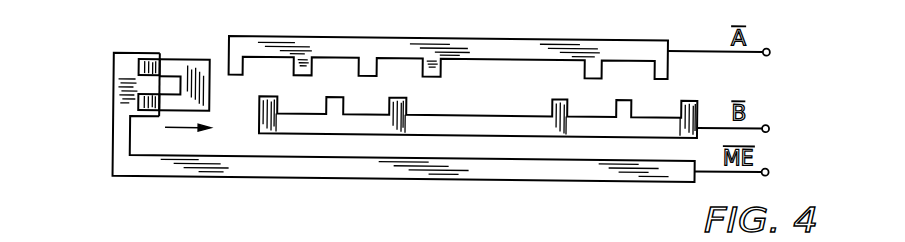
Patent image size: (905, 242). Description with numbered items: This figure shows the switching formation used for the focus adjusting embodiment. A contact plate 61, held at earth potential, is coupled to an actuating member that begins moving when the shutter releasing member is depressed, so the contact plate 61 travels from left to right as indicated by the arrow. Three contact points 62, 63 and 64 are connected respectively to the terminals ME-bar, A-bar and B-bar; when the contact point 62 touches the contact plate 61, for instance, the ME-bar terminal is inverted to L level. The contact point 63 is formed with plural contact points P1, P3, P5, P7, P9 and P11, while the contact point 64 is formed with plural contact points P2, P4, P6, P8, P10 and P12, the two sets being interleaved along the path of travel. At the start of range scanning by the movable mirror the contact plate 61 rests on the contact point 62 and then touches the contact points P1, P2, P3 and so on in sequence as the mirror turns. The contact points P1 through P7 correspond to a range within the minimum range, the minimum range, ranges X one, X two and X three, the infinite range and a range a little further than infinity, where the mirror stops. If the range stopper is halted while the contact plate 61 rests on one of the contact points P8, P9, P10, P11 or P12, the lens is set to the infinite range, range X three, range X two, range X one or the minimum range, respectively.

The contact plate 61 is at (195, 70).
The contact point 62 is at (122, 73).
The contact point 63 is at (522, 44).
The contact point 64 is at (315, 126).
The contact point P1 is at (235, 74).
The contact point P2 is at (268, 96).
The contact point P3 is at (301, 74).
The contact point P4 is at (334, 96).
The contact point P5 is at (367, 74).
The contact point P6 is at (396, 96).
The contact point P7 is at (431, 74).
The contact point P8 is at (558, 96).
The contact point P9 is at (593, 74).
The contact point P10 is at (622, 96).
The contact point P11 is at (661, 74).
The contact point P12 is at (690, 96).